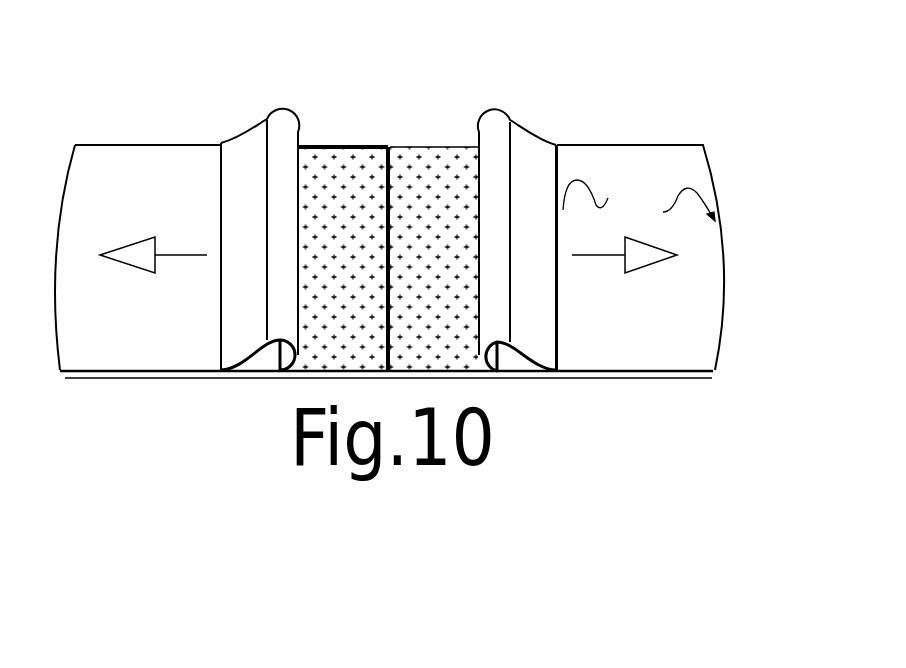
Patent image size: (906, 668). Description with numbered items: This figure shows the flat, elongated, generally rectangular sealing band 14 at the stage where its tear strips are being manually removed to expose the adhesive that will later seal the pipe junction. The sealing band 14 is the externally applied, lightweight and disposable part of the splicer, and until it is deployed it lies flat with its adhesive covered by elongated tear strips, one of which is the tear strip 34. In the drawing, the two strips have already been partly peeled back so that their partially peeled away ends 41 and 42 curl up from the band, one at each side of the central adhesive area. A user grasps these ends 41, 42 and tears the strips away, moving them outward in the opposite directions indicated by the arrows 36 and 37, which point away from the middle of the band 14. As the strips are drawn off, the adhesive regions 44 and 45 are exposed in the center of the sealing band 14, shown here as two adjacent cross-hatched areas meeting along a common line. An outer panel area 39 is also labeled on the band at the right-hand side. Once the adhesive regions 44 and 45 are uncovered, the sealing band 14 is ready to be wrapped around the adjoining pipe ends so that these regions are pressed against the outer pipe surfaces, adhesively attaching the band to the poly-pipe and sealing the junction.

The sealing band 14 is at (635, 145).
The tear strip 34 is at (639, 190).
The arrow 36 is at (179, 254).
The arrow 37 is at (592, 257).
The release liner panel 39 is at (705, 120).
The partially peeled away end 41 is at (284, 143).
The partially peeled away end 42 is at (488, 327).
The adhesive region 44 is at (320, 165).
The adhesive region 45 is at (406, 157).